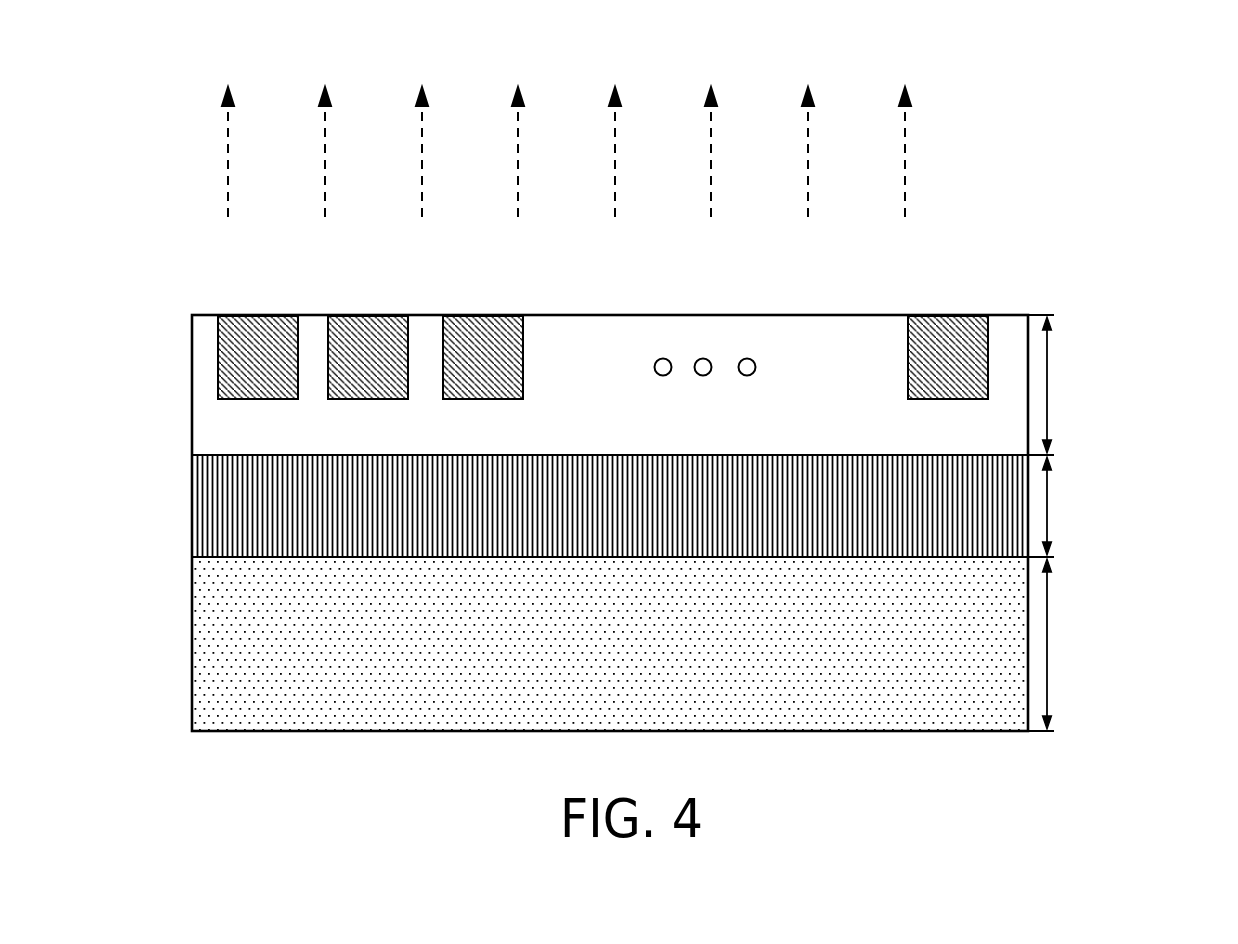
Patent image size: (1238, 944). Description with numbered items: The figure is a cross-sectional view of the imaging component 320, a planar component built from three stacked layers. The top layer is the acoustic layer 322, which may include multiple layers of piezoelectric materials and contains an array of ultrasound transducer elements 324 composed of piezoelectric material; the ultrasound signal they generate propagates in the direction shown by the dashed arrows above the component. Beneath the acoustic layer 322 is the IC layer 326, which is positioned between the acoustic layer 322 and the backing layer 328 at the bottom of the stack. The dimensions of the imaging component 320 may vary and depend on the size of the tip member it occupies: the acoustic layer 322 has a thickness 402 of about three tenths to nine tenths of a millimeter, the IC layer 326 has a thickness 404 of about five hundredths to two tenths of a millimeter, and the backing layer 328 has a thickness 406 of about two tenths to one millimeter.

The imaging component 320 is at (1120, 130).
The acoustic layer 322 is at (192, 381).
The ultrasound transducer elements 324 is at (257, 315).
The IC layer 326 is at (192, 508).
The backing layer 328 is at (192, 648).
The thickness of the acoustic layer 402 is at (1049, 384).
The thickness of the IC layer 404 is at (1049, 505).
The thickness of the backing layer 406 is at (1049, 642).